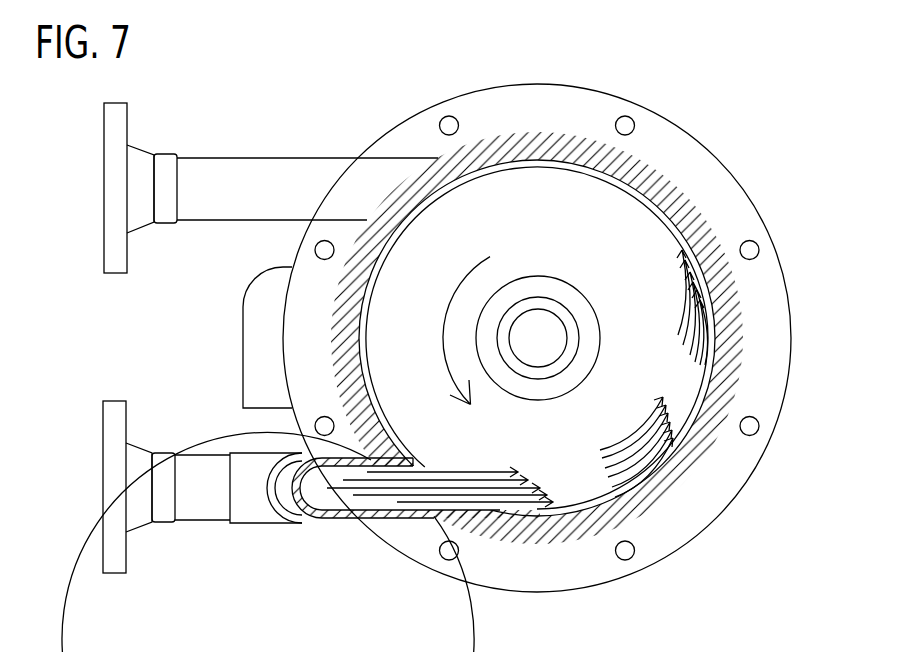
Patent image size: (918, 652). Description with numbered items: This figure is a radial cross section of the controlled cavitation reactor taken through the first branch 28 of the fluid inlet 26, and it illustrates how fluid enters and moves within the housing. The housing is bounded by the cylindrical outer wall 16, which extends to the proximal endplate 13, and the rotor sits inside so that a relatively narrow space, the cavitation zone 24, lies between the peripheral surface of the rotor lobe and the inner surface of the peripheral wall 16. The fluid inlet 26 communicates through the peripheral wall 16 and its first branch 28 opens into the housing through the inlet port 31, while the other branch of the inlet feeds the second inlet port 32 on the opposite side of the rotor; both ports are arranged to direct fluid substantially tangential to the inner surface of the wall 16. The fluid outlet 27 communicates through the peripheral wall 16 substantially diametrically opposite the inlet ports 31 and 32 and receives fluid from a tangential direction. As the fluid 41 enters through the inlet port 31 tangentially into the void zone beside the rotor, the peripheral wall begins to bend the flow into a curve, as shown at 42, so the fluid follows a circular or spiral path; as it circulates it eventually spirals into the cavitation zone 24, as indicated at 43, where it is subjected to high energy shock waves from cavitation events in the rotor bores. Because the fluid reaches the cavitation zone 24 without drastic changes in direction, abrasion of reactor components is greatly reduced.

The proximal endplate 13 is at (680, 157).
The cylindrical outer wall 16 is at (695, 233).
The cavitation zone 24 is at (706, 378).
The fluid inlet 26 is at (224, 553).
The fluid outlet 27 is at (262, 128).
The first branch 28 is at (384, 519).
The inlet port 31 is at (428, 466).
The inlet port 32 is at (552, 232).
The fluid 41 is at (485, 473).
The curved flow 42 is at (633, 432).
The spiraling flow into cavitation zone 43 is at (687, 291).